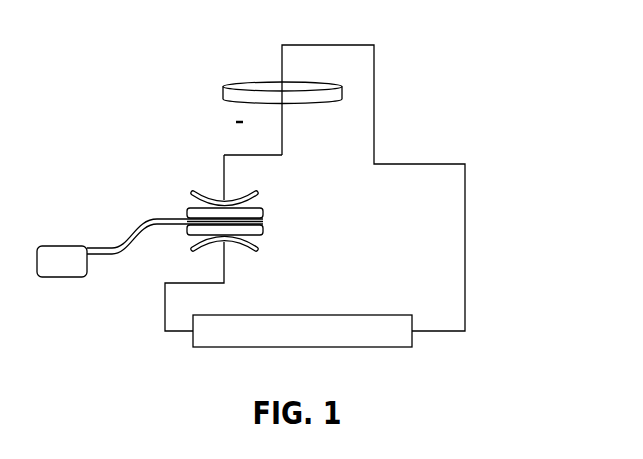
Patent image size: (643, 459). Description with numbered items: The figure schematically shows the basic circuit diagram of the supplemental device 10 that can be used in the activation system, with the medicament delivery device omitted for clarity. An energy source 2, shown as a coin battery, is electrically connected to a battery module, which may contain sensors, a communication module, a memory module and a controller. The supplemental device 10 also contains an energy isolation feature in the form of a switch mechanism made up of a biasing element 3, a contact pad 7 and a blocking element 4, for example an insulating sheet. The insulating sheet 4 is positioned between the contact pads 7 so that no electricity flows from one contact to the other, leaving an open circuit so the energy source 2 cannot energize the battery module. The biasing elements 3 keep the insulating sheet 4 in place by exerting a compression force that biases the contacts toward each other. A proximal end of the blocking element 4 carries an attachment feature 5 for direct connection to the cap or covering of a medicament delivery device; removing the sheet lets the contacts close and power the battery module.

The energy source 2 is at (223, 91).
The biasing element 3 is at (215, 199).
The blocking element 4 is at (153, 226).
The attachment feature 5 is at (57, 248).
The contact pad 7 is at (263, 212).
The supplemental device 10 is at (302, 315).